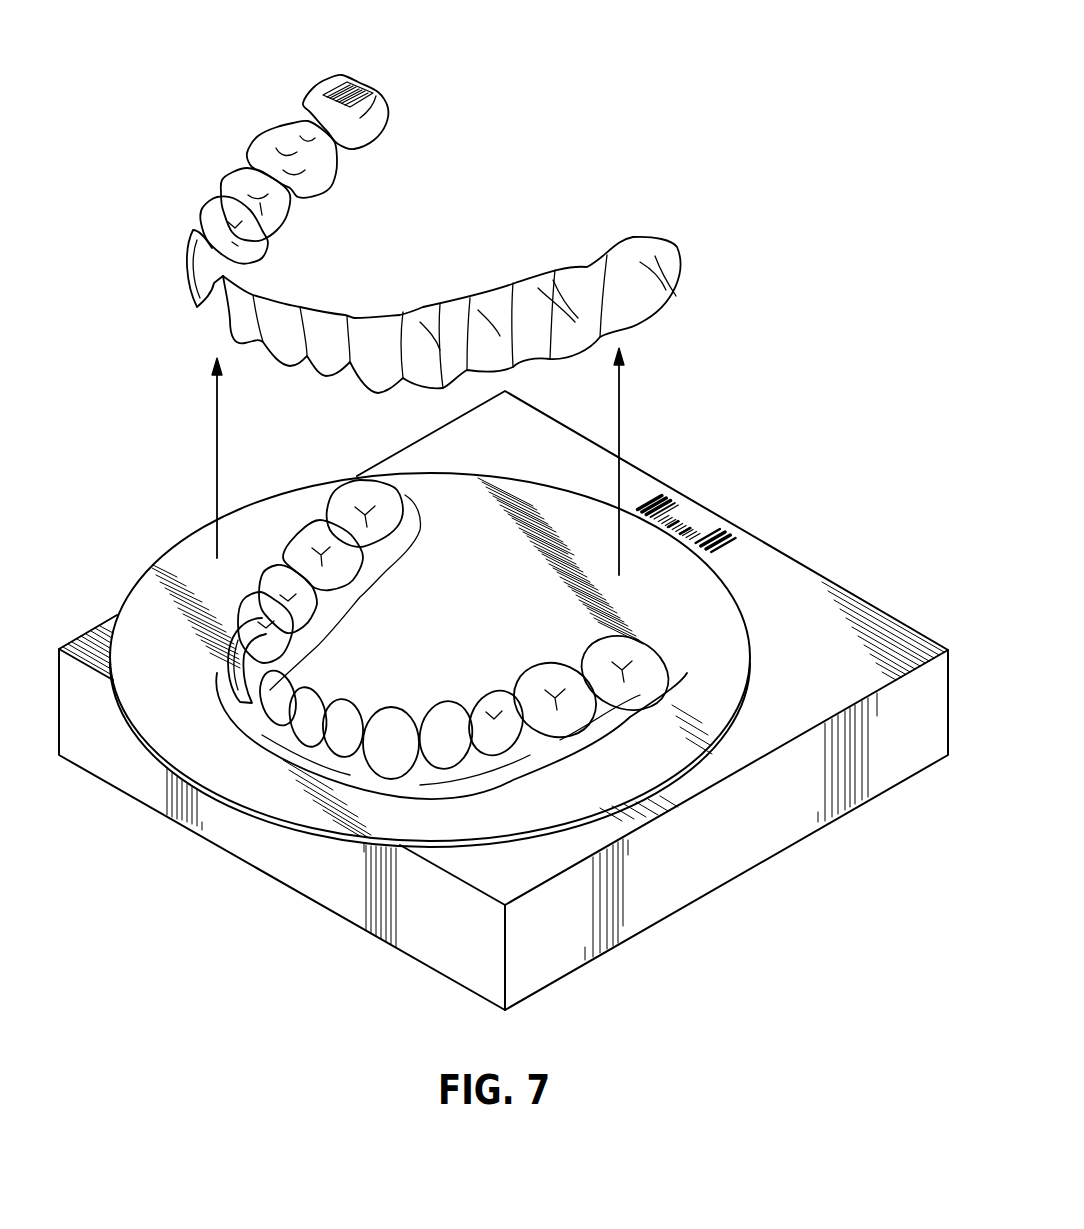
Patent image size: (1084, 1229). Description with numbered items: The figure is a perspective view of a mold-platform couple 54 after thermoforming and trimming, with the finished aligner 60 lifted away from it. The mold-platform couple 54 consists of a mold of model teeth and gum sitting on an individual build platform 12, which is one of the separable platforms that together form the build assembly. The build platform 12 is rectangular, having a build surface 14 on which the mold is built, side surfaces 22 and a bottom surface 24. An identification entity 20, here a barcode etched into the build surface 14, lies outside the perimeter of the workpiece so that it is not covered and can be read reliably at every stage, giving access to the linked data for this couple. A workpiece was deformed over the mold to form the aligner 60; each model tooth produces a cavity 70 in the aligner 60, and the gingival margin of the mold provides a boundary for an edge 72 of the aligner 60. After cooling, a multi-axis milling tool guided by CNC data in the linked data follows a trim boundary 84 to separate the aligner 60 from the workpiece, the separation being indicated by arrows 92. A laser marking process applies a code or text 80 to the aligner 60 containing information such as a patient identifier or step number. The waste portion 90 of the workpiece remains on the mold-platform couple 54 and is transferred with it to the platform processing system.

The individual build platform 12 is at (497, 700).
The build surface 14 is at (512, 450).
The identification entity 20 is at (642, 497).
The side surface 22 is at (897, 760).
The bottom surface 24 is at (337, 915).
The mold-platform couple 54 is at (412, 445).
The aligner 60 is at (451, 203).
The cavity 70 is at (462, 298).
The edge 72 is at (313, 197).
The code or text 80 is at (362, 83).
The trim boundary 84 is at (220, 320).
The waste portion 90 is at (472, 638).
The arrows 92 is at (216, 437).